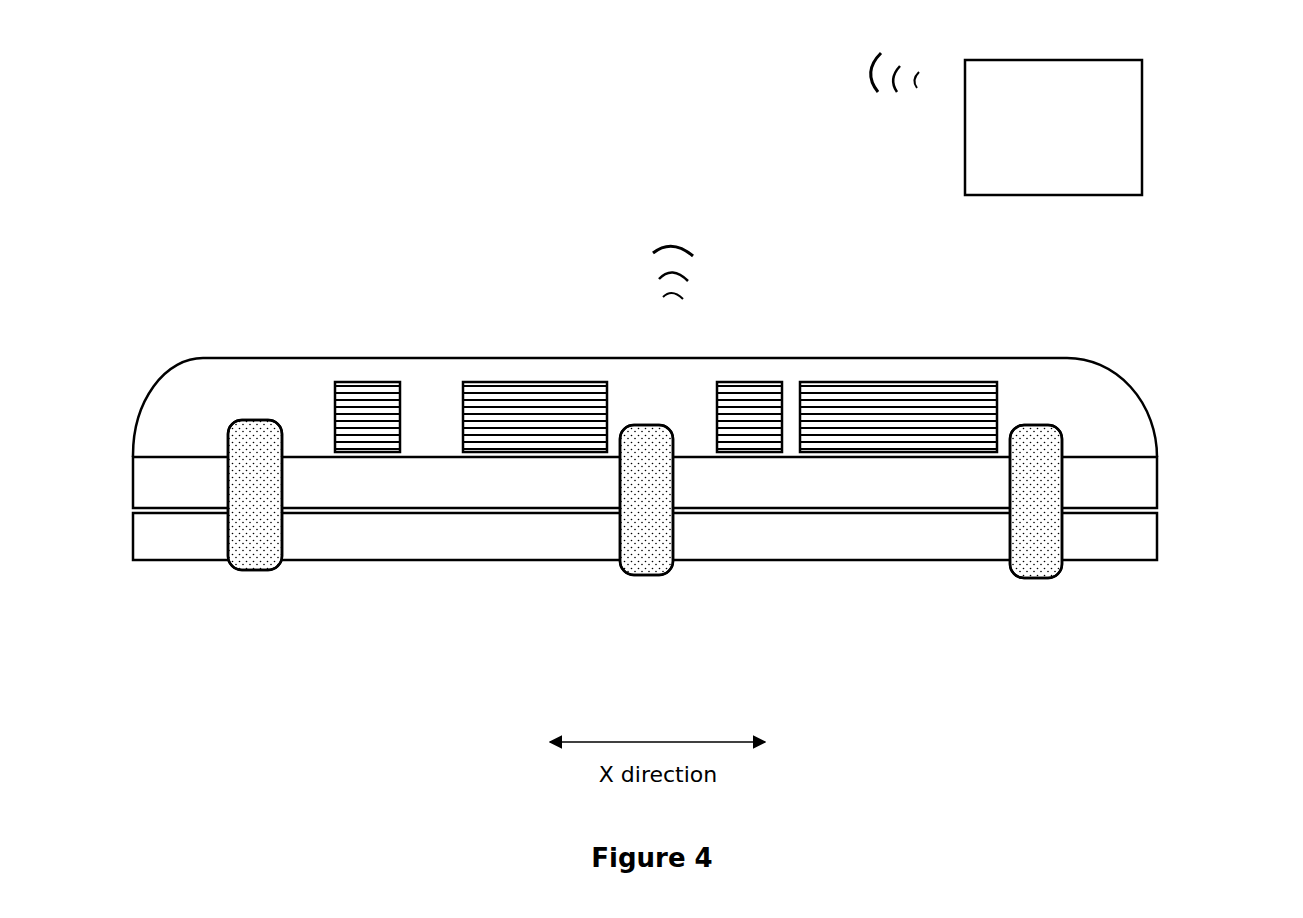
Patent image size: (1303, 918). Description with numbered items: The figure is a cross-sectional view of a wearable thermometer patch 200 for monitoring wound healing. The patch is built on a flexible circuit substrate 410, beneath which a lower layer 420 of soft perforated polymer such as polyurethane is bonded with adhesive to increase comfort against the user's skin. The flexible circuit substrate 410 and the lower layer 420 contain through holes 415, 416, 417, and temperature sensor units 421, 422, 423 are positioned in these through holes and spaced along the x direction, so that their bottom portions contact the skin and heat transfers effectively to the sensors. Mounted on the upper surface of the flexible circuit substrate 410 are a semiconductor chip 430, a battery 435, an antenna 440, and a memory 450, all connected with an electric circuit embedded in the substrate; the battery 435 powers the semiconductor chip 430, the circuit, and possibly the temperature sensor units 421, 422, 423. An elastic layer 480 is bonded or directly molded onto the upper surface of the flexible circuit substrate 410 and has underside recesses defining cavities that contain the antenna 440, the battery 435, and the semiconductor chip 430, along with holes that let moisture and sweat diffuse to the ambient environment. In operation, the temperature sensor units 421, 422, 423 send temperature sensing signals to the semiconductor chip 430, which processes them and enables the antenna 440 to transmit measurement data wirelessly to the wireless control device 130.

The wireless control device 130 is at (1006, 124).
The wearable thermometer patch 200 is at (1100, 405).
The flexible circuit substrate 410 is at (1125, 488).
The lower layer 420 is at (1130, 538).
The through hole 415 is at (223, 585).
The through hole 416 is at (618, 583).
The through hole 417 is at (1012, 583).
The temperature sensor unit 421 is at (258, 553).
The temperature sensor unit 422 is at (648, 555).
The temperature sensor unit 423 is at (1040, 560).
The semiconductor chip 430 is at (530, 394).
The battery 435 is at (893, 394).
The antenna 440 is at (372, 394).
The memory 450 is at (750, 392).
The elastic layer 480 is at (1040, 380).